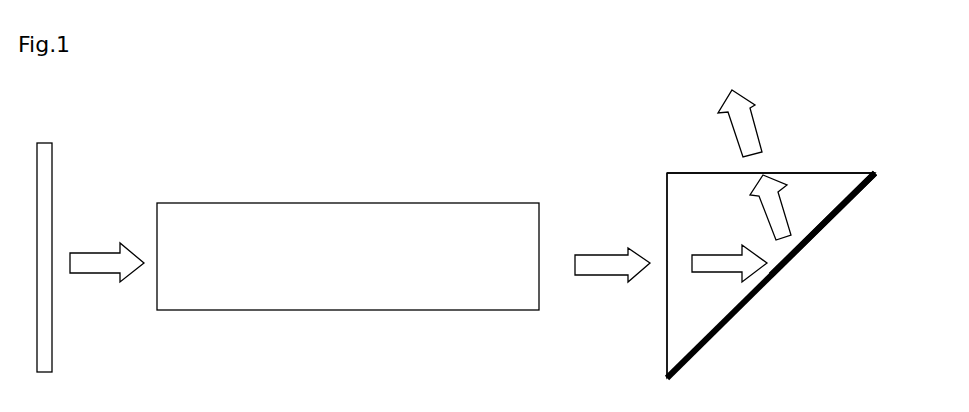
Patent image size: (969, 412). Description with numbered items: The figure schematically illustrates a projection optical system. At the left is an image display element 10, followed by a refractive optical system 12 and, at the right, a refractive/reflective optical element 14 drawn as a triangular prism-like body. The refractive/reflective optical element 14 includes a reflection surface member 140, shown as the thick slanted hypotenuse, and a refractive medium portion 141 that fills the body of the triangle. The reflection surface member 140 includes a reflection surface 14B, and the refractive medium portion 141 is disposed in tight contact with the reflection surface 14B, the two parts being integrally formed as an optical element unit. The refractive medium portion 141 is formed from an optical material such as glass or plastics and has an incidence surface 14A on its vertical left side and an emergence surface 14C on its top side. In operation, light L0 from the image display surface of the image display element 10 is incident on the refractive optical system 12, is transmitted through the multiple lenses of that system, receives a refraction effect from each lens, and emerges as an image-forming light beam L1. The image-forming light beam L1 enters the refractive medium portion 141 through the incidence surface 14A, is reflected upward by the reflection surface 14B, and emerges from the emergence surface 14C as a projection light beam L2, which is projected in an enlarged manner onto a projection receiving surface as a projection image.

The image display element 10 is at (43, 145).
The refractive optical system 12 is at (277, 215).
The refractive/reflective optical element 14 is at (882, 158).
The reflection surface member 140 is at (778, 265).
The refractive medium portion 141 is at (730, 237).
The incidence surface 14A is at (667, 322).
The reflection surface 14B is at (906, 254).
The emergence surface 14C is at (845, 156).
The light L0 is at (109, 263).
The image-forming light beam L1 is at (610, 263).
The projection light beam L2 is at (740, 123).